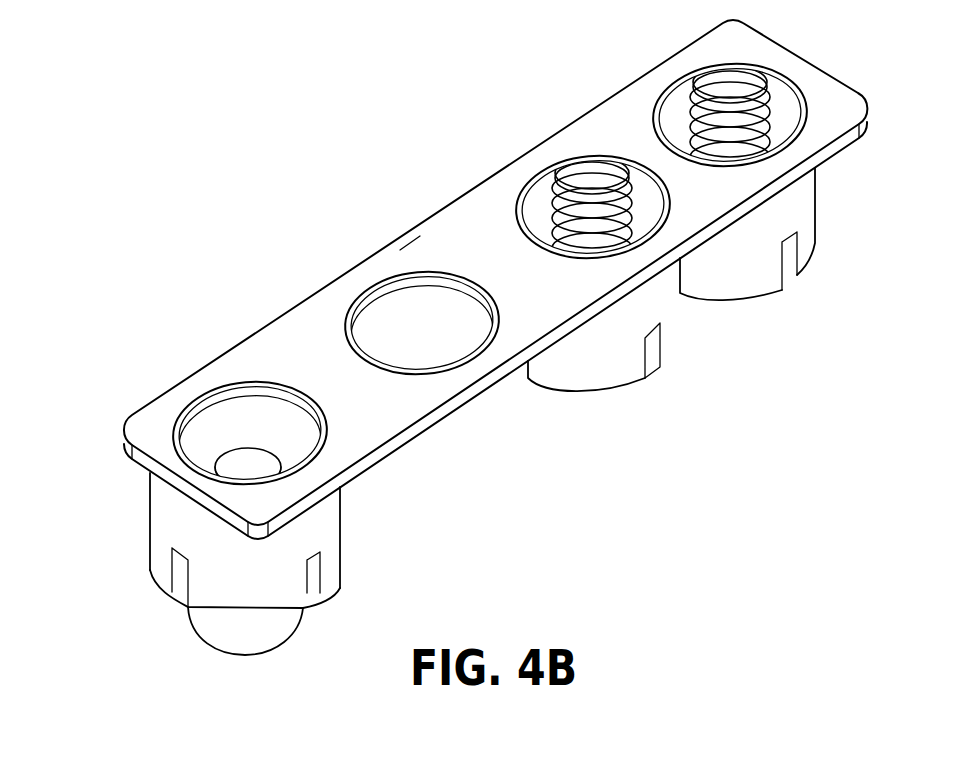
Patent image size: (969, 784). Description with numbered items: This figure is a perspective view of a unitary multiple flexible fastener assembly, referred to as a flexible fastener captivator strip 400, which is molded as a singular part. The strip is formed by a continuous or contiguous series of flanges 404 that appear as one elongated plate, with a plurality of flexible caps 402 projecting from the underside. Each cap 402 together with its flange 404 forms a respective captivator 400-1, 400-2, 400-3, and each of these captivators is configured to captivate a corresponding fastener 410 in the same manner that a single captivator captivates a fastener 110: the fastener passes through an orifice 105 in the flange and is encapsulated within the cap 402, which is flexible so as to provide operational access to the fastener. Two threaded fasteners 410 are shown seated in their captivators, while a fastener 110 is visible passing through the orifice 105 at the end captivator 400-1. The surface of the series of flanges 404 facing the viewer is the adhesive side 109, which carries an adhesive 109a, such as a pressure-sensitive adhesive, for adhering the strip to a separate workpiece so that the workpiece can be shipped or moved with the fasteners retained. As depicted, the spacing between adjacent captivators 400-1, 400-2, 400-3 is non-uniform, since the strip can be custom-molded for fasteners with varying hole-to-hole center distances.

The flexible fastener captivator strip 400 is at (236, 228).
The flange 404 is at (151, 0).
The adhesive 109a is at (472, 212).
The adhesive side 109 is at (326, 314).
The orifice 105 is at (209, 433).
The fastener 410 is at (583, 172).
The captivator 400-1 is at (160, 533).
The captivator 400-2 is at (568, 373).
The captivator 400-3 is at (765, 280).
The flexible cap 402 is at (345, 531).
The fastener 110 is at (248, 637).